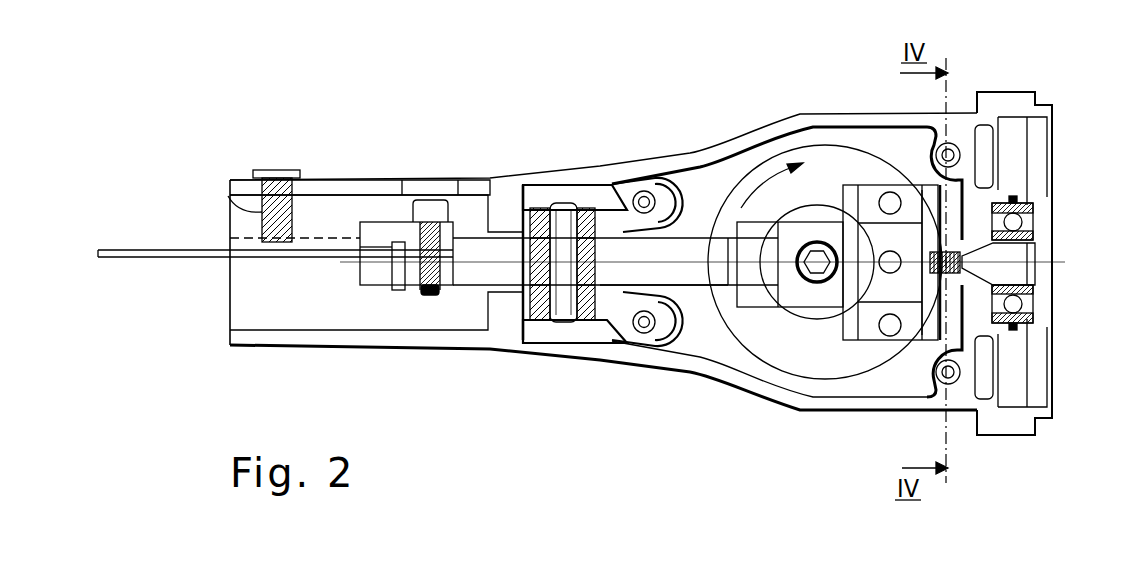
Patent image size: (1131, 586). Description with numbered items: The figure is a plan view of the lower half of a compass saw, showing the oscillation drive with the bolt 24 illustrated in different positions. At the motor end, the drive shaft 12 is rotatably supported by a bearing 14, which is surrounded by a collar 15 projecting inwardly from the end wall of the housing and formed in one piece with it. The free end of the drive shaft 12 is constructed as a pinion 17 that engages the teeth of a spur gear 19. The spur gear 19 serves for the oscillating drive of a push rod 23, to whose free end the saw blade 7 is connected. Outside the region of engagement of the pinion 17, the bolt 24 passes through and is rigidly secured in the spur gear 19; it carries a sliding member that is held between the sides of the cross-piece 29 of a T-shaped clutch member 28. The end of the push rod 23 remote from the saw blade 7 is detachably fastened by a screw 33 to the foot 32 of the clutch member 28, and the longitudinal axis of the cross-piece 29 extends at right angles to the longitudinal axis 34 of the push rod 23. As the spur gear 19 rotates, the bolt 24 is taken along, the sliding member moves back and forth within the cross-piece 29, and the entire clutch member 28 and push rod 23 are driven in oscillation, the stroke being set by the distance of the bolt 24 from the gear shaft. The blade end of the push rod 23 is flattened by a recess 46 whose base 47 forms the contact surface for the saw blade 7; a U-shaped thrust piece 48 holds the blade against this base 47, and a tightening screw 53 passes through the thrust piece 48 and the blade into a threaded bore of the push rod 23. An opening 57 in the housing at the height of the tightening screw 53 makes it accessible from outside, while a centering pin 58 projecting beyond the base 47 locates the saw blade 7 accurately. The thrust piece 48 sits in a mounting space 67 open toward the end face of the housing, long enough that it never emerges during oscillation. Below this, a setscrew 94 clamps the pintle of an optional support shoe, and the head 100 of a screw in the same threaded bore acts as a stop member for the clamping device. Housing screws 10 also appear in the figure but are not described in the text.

The saw blade 7 is at (158, 250).
The setscrew 94 is at (240, 205).
The head 100 is at (264, 170).
The mounting space 67 is at (323, 207).
The opening 57 is at (432, 187).
The thrust piece 48 is at (368, 232).
The recess 46 is at (455, 245).
The tightening screw 53 is at (431, 296).
The centering pin 58 is at (388, 277).
The base 47 is at (370, 248).
The longitudinal axis 34 is at (685, 262).
The push rod 23 is at (697, 280).
The spur gear 19 is at (812, 172).
The foot 32 is at (805, 232).
The screw 33 is at (815, 283).
The clutch member 28 is at (861, 180).
The cross-piece 29 is at (912, 192).
The bolt 24 is at (878, 326).
The housing screws 10 is at (951, 150).
The bearing 14 is at (1033, 210).
The collar 15 is at (997, 203).
The pinion 17 is at (963, 263).
The drive shaft 12 is at (1013, 275).